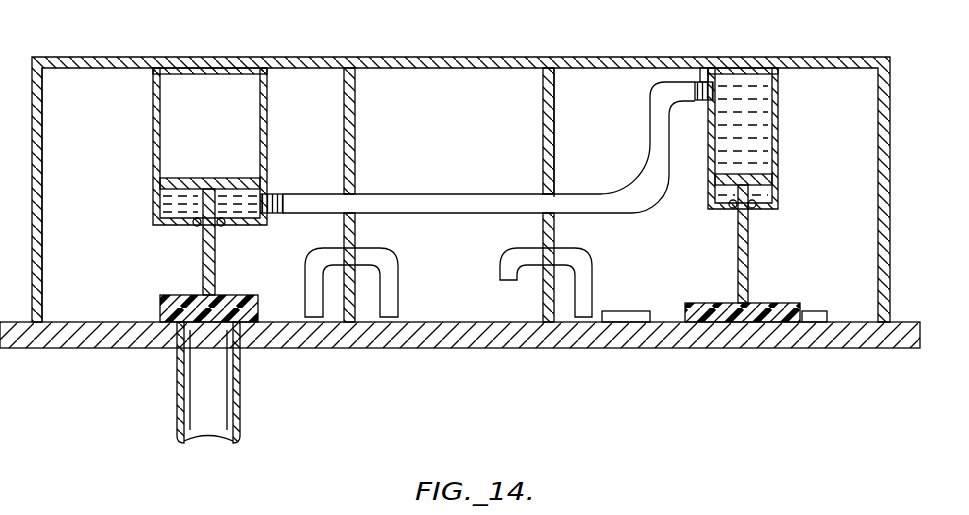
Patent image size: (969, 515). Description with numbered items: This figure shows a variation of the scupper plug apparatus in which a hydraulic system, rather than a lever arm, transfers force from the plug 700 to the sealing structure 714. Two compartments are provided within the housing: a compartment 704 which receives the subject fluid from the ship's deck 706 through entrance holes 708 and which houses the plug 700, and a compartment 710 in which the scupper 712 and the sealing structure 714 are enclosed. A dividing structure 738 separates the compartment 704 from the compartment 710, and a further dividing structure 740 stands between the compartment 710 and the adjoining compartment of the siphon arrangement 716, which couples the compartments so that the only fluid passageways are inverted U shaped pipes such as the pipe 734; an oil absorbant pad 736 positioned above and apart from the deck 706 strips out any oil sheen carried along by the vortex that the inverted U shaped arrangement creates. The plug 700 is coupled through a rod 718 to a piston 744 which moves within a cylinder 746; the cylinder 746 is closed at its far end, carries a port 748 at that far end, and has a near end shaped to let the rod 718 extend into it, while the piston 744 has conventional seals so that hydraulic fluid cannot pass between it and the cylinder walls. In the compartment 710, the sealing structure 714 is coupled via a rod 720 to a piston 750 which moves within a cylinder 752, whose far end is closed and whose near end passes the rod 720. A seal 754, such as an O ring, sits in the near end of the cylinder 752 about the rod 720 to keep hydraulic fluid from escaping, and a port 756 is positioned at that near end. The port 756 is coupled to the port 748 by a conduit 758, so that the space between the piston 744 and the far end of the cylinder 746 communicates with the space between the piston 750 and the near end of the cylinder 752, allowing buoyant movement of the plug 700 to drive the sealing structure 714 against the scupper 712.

The plug 700 is at (755, 303).
The compartment 704 is at (627, 164).
The ship's deck 706 is at (640, 336).
The entrance holes 708 is at (630, 311).
The compartment 710 is at (100, 249).
The scupper 712 is at (218, 440).
The sealing structure 714 is at (252, 300).
The siphon arrangement 716 is at (450, 50).
The rod 718 is at (750, 260).
The rod 720 is at (216, 272).
The inverted U shaped pipe 734 is at (583, 268).
The oil absorbant pad 736 is at (386, 268).
The dividing structure 738 is at (556, 99).
The dividing structure 740 is at (357, 91).
The piston 744 is at (762, 180).
The cylinder 746 is at (780, 100).
The port 748 is at (703, 70).
The piston 750 is at (237, 178).
The cylinder 752 is at (268, 96).
The seal 754 is at (223, 227).
The port 756 is at (272, 193).
The conduit 758 is at (484, 194).